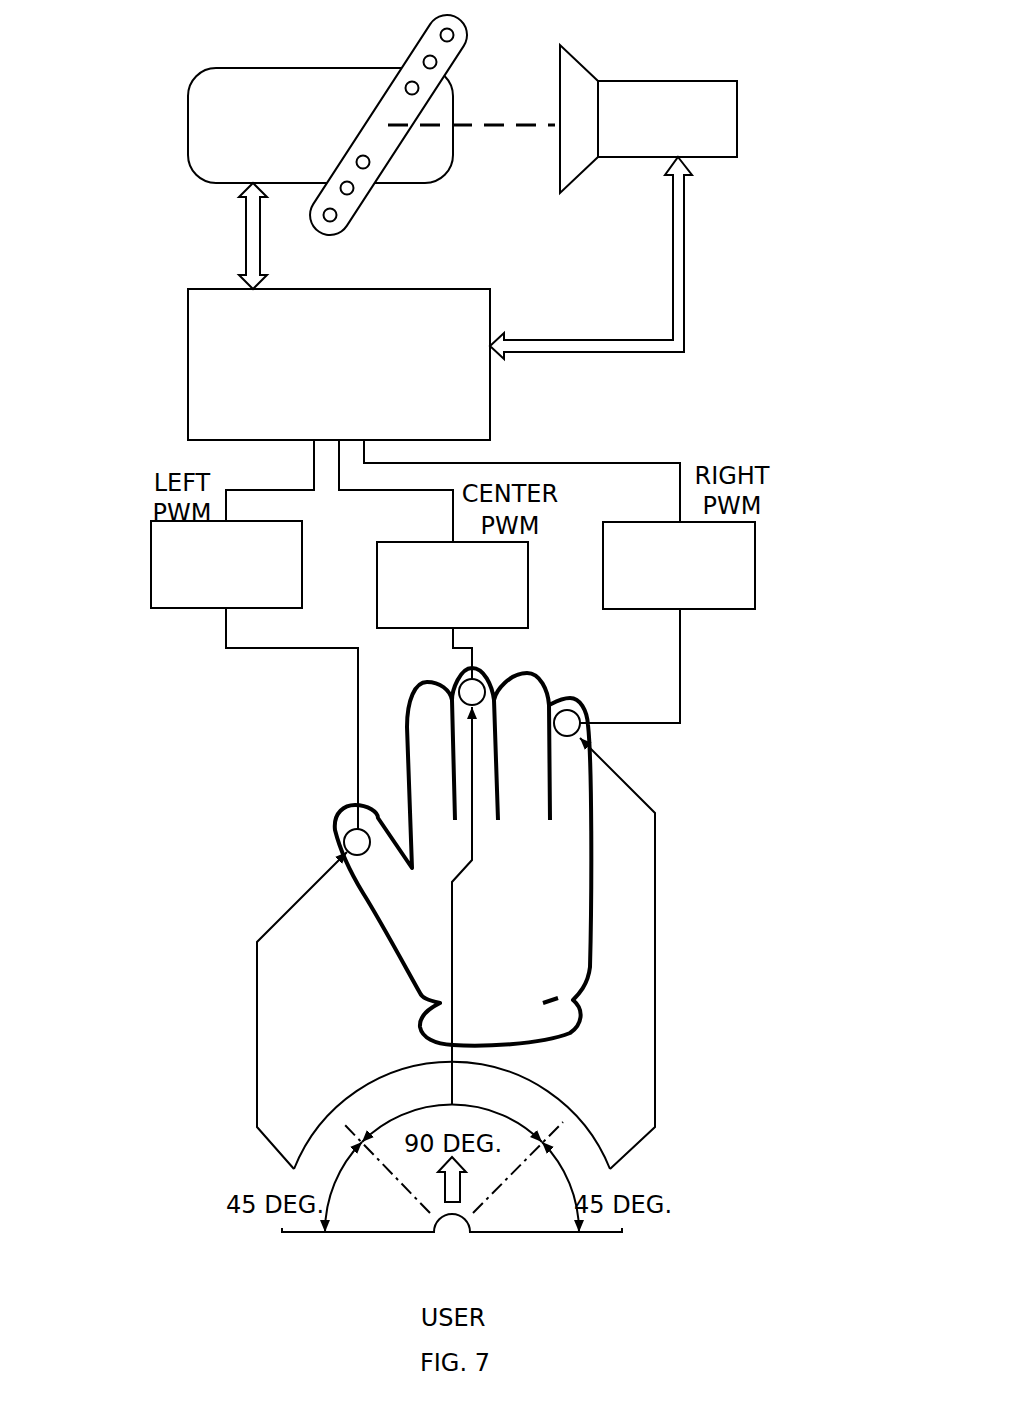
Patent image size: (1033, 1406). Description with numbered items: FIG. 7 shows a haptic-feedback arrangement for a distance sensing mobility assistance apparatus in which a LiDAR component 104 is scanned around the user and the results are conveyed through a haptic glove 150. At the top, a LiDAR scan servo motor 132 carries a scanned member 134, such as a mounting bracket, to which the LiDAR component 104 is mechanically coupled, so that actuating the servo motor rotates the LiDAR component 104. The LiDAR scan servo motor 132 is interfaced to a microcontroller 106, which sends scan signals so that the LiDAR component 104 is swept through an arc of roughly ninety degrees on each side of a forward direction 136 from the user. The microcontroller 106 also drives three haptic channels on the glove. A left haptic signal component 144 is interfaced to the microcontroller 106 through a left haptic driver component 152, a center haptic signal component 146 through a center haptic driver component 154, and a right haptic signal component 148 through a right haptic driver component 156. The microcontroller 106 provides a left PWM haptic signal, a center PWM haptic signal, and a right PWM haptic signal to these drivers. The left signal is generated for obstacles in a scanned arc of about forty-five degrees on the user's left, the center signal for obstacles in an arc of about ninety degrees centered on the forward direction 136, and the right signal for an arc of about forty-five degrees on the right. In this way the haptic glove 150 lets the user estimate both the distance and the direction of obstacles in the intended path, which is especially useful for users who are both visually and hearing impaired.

The LiDAR component 104 is at (733, 88).
The microcontroller 106 is at (202, 307).
The LiDAR scan servo motor 132 is at (203, 97).
The scanned member 134 is at (425, 43).
The forward direction 136 is at (442, 1183).
The left haptic signal component 144 is at (345, 837).
The center haptic signal component 146 is at (487, 680).
The right haptic signal component 148 is at (582, 712).
The haptic glove 150 is at (400, 970).
The left haptic driver component 152 is at (158, 583).
The center haptic driver component 154 is at (422, 540).
The right haptic driver component 156 is at (752, 575).